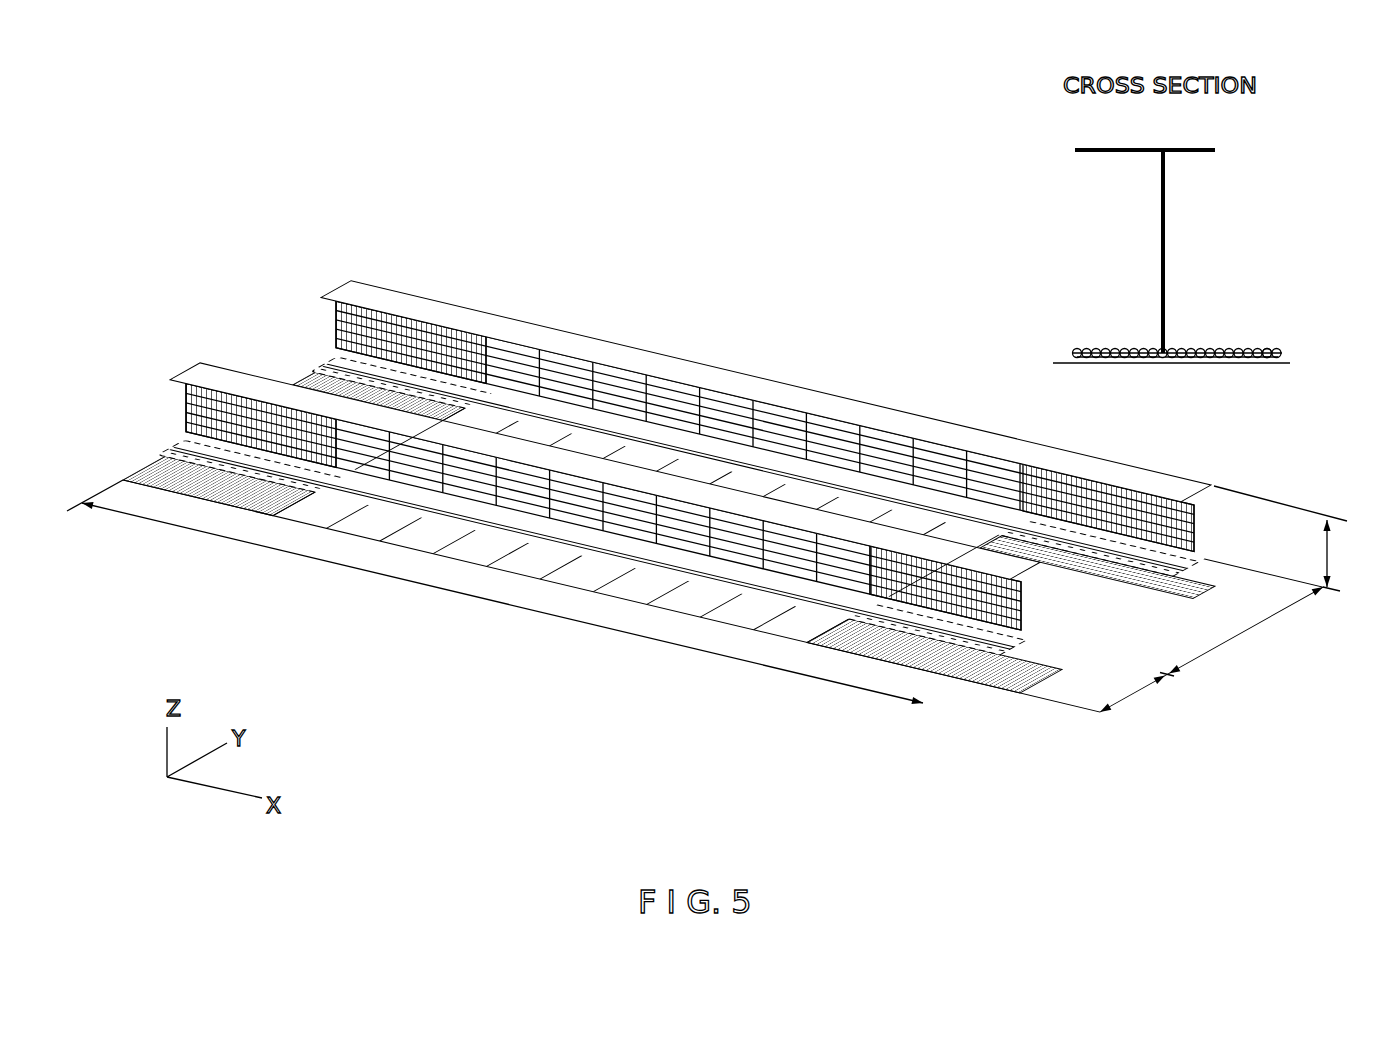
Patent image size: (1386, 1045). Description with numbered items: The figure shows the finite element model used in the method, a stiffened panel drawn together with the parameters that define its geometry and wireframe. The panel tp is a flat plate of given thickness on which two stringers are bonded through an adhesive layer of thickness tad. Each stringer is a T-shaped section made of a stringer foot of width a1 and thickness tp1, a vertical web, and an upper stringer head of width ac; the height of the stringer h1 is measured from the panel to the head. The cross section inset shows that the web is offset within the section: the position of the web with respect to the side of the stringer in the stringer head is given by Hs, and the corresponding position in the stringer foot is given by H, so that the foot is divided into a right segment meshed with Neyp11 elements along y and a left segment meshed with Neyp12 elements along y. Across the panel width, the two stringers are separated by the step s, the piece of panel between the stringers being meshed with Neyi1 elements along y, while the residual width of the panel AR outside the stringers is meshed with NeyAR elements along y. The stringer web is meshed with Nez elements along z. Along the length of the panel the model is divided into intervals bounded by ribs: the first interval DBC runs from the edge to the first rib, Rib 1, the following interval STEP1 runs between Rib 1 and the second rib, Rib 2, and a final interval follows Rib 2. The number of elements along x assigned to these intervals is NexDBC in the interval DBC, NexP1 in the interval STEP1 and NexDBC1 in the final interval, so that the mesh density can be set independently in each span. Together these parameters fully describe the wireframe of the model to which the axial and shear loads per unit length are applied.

The interval between ribs DBC is at (495, 593).
The number of elements along x in the DBC interval NexDBC is at (207, 502).
The first rib Rib 1 is at (280, 528).
The first step interval between ribs STEP1 is at (723, 533).
The number of elements along x in the STEP1 interval NexP1 is at (540, 580).
The second rib Rib 2 is at (803, 637).
The number of elements along x in the DBC1 interval NexDBC1 is at (900, 665).
The number of elements along y in the residual width NeyAR is at (1007, 665).
The residual width of the panel AR is at (1136, 693).
The step between the stringers s is at (1246, 630).
The number of elements along y in the piece of panel between stringers Neyi1 is at (1130, 598).
The number of elements along z in the stringer web Nez is at (1230, 510).
The height of the stringer h1 is at (1290, 538).
The width of the stringer head ac is at (1215, 142).
The position of the web in the stringer head Hs is at (1075, 173).
The position of the web in the stringer foot H is at (1075, 350).
The thickness of the adhesive tad is at (1200, 350).
The thickness of the stringer foot tp1 is at (1263, 350).
The thickness of the panel tp is at (1293, 363).
The number of elements along y in the right segment of the stringer foot Neyp11 is at (1118, 366).
The number of elements along y in the left segment of the stringer foot Neyp12 is at (1197, 367).
The width of the stringer foot a1 is at (1275, 432).